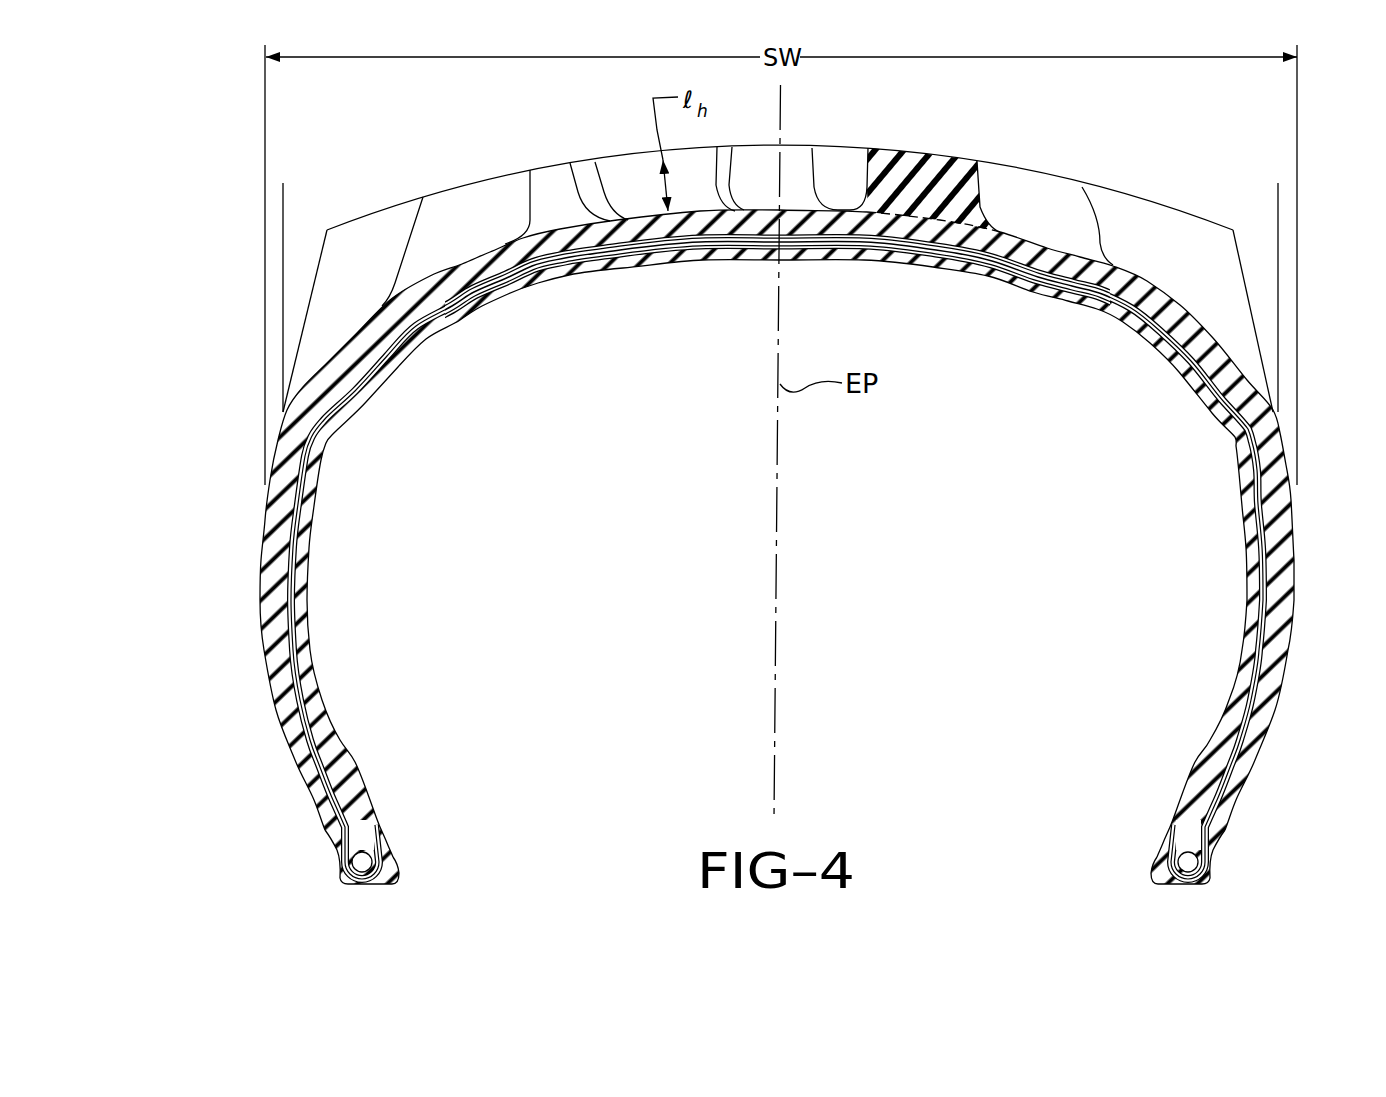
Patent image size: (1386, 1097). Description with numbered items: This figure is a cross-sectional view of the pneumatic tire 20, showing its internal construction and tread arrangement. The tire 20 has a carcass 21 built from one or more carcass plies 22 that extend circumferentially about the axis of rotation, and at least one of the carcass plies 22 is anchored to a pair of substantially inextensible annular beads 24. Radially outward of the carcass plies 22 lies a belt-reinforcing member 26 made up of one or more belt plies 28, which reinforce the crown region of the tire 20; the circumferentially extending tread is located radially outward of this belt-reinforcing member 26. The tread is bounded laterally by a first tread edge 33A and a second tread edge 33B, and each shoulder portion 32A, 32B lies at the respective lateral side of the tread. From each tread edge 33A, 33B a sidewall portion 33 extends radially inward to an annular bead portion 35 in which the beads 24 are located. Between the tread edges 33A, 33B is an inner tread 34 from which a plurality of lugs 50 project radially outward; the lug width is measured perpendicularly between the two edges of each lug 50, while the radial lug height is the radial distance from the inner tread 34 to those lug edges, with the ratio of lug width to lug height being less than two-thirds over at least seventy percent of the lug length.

The tire 20 is at (1120, 132).
The carcass 21 is at (259, 625).
The carcass ply 22 is at (298, 736).
The annular bead 24 is at (366, 860).
The belt-reinforcing member 26 is at (549, 277).
The belt ply 28 is at (659, 258).
The shoulder portion 32A is at (441, 189).
The shoulder portion 32B is at (1118, 185).
The sidewall portion 33 is at (264, 541).
The first tread edge 33A is at (283, 228).
The second tread edge 33B is at (1278, 229).
The inner tread 34 is at (719, 161).
The annular bead portion 35 is at (309, 803).
The lug 50 is at (956, 160).